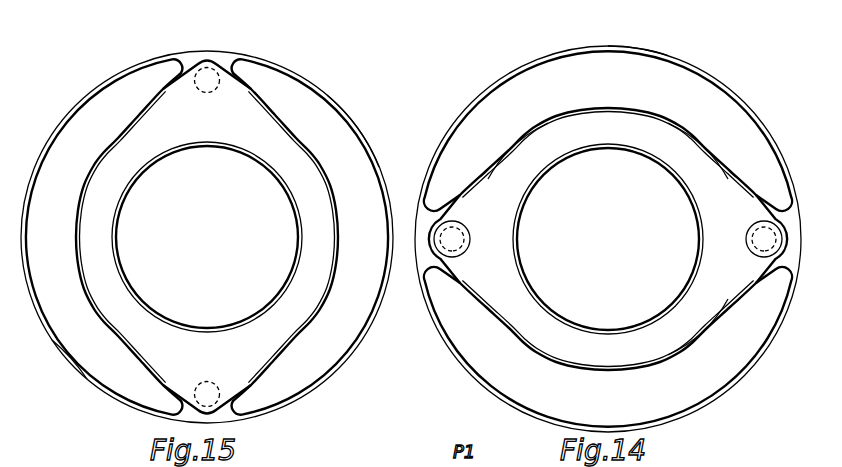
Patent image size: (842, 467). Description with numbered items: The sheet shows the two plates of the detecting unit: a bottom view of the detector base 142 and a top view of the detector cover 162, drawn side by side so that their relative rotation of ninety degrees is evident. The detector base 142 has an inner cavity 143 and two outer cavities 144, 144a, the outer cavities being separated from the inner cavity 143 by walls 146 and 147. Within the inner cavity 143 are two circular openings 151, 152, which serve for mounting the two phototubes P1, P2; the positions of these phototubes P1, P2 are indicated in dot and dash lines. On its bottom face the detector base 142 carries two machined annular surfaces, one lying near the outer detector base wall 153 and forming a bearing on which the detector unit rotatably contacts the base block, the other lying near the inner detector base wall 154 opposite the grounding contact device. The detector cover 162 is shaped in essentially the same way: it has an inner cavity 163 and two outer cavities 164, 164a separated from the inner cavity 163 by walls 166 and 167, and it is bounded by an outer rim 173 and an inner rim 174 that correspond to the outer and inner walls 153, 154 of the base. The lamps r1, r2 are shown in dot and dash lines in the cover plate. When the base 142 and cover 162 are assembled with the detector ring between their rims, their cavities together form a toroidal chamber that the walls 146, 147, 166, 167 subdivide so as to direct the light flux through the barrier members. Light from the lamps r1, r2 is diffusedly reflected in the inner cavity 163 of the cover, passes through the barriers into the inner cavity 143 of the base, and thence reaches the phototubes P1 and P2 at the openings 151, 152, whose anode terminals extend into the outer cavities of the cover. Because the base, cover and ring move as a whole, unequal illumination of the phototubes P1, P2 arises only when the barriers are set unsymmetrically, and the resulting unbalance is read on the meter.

In FIG. 15, the detector cover 162 is at (99, 412).
In FIG. 15, the inner cavity 163 is at (267, 128).
In FIG. 15, the outer cavity 164 is at (50, 172).
In FIG. 15, the outer cavity 164a is at (357, 180).
In FIG. 15, the wall 166 is at (110, 142).
In FIG. 15, the wall 167 is at (308, 327).
In FIG. 15, the outer rim 173 is at (68, 365).
In FIG. 15, the inner rim 174 is at (139, 303).
In FIG. 15, the lamp r1 is at (207, 70).
In FIG. 15, the lamp r2 is at (206, 383).
In FIG. 14, the detector base 142 is at (517, 64).
In FIG. 14, the inner cavity 143 is at (672, 146).
In FIG. 14, the outer cavity 144 is at (608, 131).
In FIG. 14, the outer cavity 144a is at (608, 347).
In FIG. 14, the wall 146 is at (500, 153).
In FIG. 14, the wall 147 is at (692, 345).
In FIG. 14, the circular opening 151 is at (460, 230).
In FIG. 14, the circular opening 152 is at (753, 233).
In FIG. 14, the outer detector base wall 153 is at (662, 38).
In FIG. 14, the inner detector base wall 154 is at (540, 310).
In FIG. 14, the phototube P1 is at (455, 243).
In FIG. 14, the phototube P2 is at (754, 250).